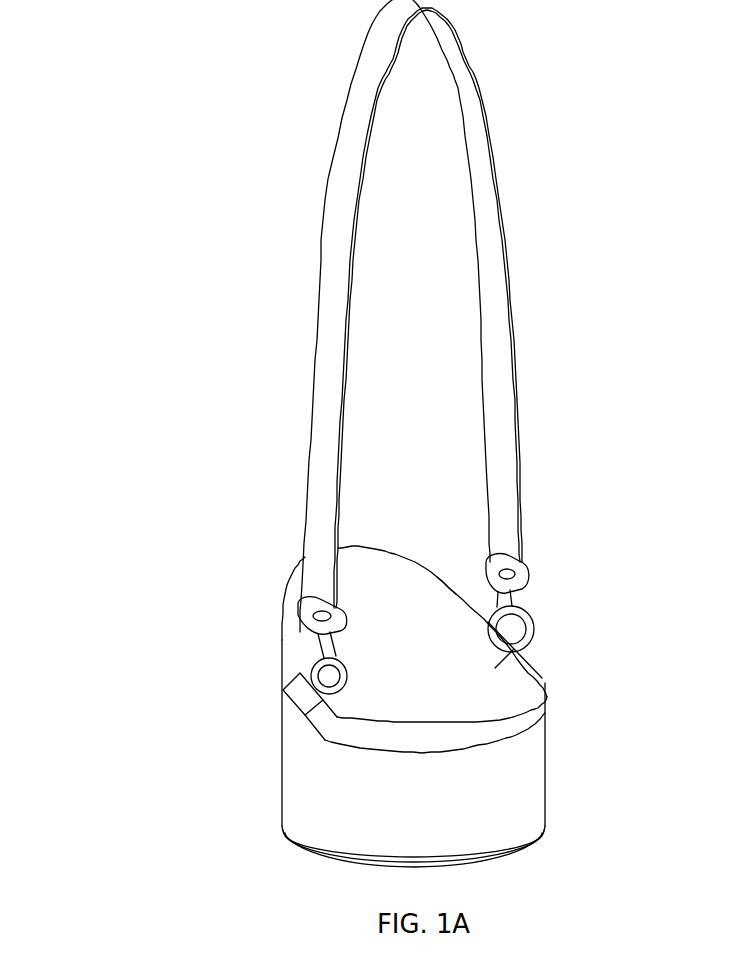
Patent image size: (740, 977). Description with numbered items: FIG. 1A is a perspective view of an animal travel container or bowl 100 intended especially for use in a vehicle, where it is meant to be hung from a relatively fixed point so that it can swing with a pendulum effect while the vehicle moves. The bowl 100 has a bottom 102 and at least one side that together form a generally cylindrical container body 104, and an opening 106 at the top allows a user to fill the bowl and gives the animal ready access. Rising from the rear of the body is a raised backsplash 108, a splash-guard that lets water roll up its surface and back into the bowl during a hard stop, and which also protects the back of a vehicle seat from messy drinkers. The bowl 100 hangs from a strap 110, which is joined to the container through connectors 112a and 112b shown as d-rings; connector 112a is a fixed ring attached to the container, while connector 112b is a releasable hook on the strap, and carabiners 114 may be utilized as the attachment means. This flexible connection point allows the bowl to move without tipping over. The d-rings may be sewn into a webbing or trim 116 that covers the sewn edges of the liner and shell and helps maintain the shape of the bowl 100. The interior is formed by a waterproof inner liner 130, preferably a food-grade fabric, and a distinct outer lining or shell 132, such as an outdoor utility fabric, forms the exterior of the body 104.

The animal travel container or bowl 100 is at (141, 101).
The bottom 102 is at (497, 866).
The container body 104 is at (396, 781).
The opening 106 is at (410, 657).
The raised backsplash 108 is at (375, 550).
The strap 110 is at (318, 480).
The connector 112a is at (528, 630).
The connector 112b is at (530, 570).
The carabiner 114 is at (318, 638).
The webbing or trim 116 is at (472, 728).
The inner liner 130 is at (444, 622).
The outer lining or shell 132 is at (525, 777).